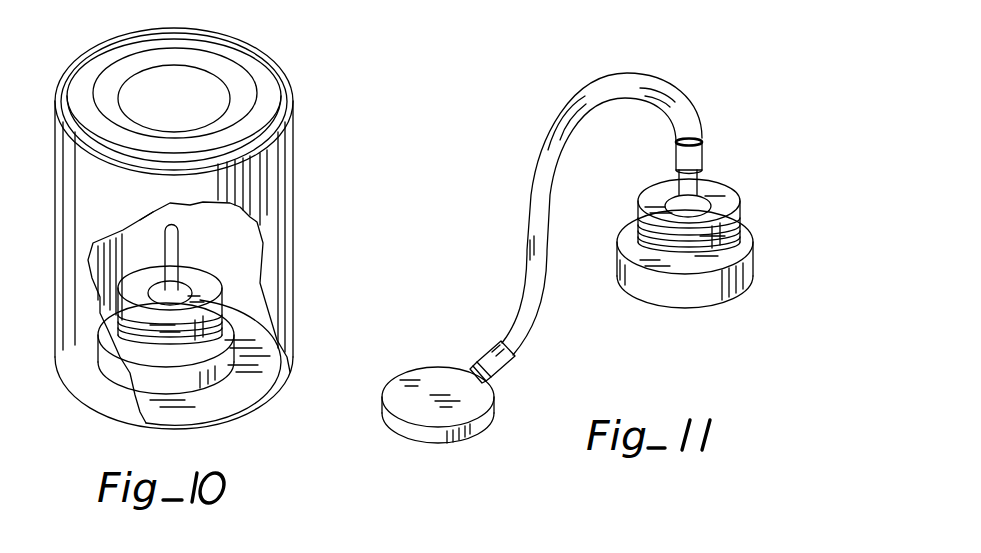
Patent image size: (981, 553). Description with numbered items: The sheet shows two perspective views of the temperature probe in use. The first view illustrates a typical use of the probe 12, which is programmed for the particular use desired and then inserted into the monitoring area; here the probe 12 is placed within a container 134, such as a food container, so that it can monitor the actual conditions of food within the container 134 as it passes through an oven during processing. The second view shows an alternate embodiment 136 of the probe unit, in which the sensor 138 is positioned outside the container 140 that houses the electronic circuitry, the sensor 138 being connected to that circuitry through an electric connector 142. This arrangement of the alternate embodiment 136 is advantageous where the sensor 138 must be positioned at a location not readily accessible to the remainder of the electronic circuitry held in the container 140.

In FIG. 10, the probe 12 is at (210, 288).
In FIG. 10, the container 134 is at (88, 365).
In FIG. 11, the alternate embodiment of the probe 136 is at (559, 389).
In FIG. 11, the sensor 138 is at (418, 378).
In FIG. 11, the container 140 is at (733, 277).
In FIG. 11, the electric connector 142 is at (536, 185).